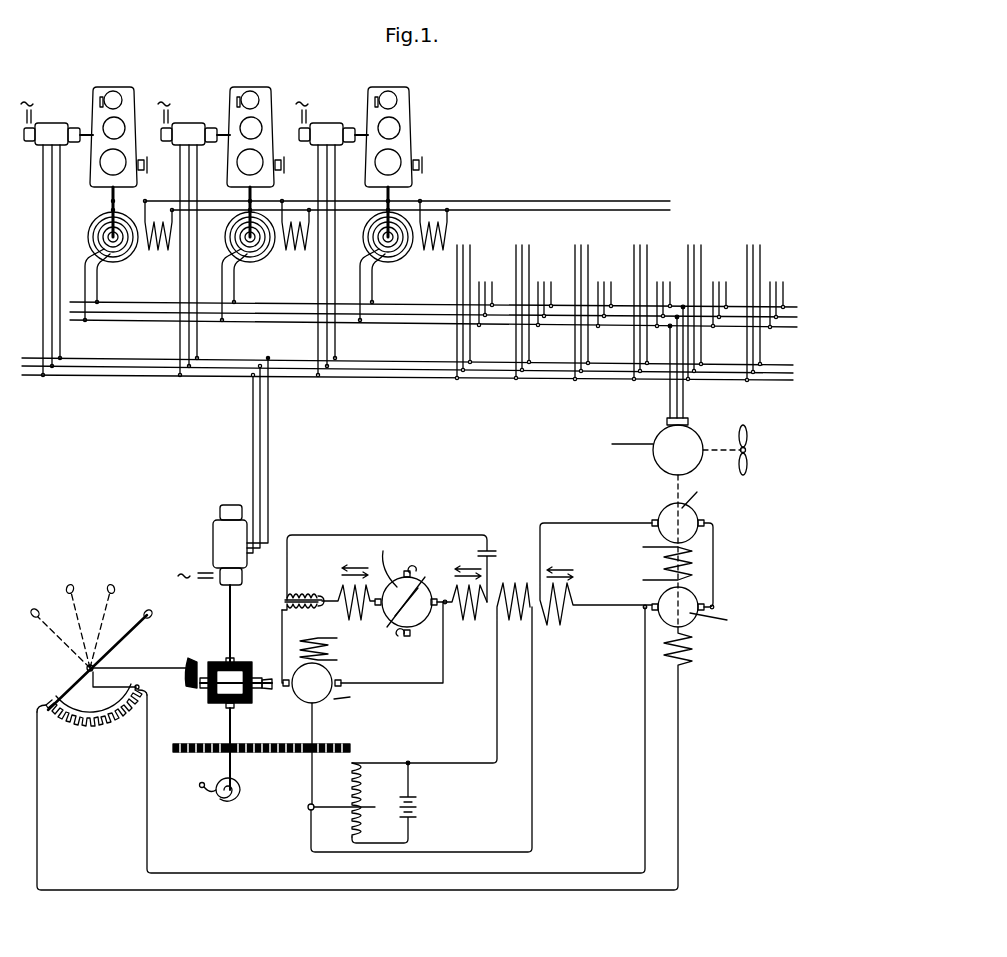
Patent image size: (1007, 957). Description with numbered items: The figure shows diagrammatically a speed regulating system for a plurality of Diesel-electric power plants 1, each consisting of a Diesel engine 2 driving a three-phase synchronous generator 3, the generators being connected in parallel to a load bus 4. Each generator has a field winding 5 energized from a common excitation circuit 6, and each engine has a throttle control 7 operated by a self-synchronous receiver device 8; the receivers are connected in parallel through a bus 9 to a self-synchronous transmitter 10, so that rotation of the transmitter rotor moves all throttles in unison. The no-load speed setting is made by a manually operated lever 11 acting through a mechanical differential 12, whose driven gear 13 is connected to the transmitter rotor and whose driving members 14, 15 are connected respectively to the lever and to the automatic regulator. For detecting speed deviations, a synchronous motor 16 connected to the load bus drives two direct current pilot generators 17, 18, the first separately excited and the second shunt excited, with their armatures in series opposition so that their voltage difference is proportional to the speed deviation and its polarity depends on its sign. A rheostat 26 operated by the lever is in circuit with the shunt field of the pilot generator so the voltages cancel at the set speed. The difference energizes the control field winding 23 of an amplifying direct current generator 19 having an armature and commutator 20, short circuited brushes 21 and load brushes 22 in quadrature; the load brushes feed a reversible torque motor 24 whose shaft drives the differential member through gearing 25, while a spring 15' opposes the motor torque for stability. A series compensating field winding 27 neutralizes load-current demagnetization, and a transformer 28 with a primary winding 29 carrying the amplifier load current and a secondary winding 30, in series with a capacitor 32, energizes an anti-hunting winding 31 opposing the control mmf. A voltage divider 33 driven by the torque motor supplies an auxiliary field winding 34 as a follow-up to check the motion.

The Diesel-electric power plant 1 is at (357, 79).
The Diesel engine 2 is at (372, 146).
The three-phase synchronous generator 3 is at (393, 257).
The load bus 4 is at (435, 310).
The field winding 5 is at (431, 252).
The excitation circuit 6 is at (517, 210).
The throttle control 7 is at (362, 134).
The self-synchronous receiver device 8 is at (326, 124).
The bus 9 is at (135, 362).
The self-synchronous transmitter 10 is at (220, 533).
The manually operated lever 11 is at (121, 638).
The mechanical differential 12 is at (277, 665).
The driven member or gear 13 is at (238, 663).
The driving member 14 is at (199, 675).
The driving member 15 is at (246, 749).
The spring 15' is at (232, 799).
The synchronous motor 16 is at (691, 437).
The separately excited pilot generator 17 is at (669, 512).
The shunt excited pilot generator 18 is at (685, 594).
The amplifying direct current generator 19 is at (412, 665).
The armature and commutator 20 is at (422, 610).
The short circuited brushes 21 is at (412, 634).
The load brushes 22 is at (437, 599).
The control field winding 23 is at (566, 620).
The reversible torque motor 24 is at (300, 701).
The gearing 25 is at (305, 754).
The rheostat 26 is at (93, 732).
The series compensating field winding 27 is at (340, 605).
The transformer 28 is at (285, 600).
The primary winding 29 is at (304, 610).
The secondary winding 30 is at (305, 591).
The anti-hunting winding 31 is at (474, 620).
The series capacitor 32 is at (493, 552).
The voltage divider 33 is at (392, 785).
The auxiliary field winding 34 is at (507, 588).